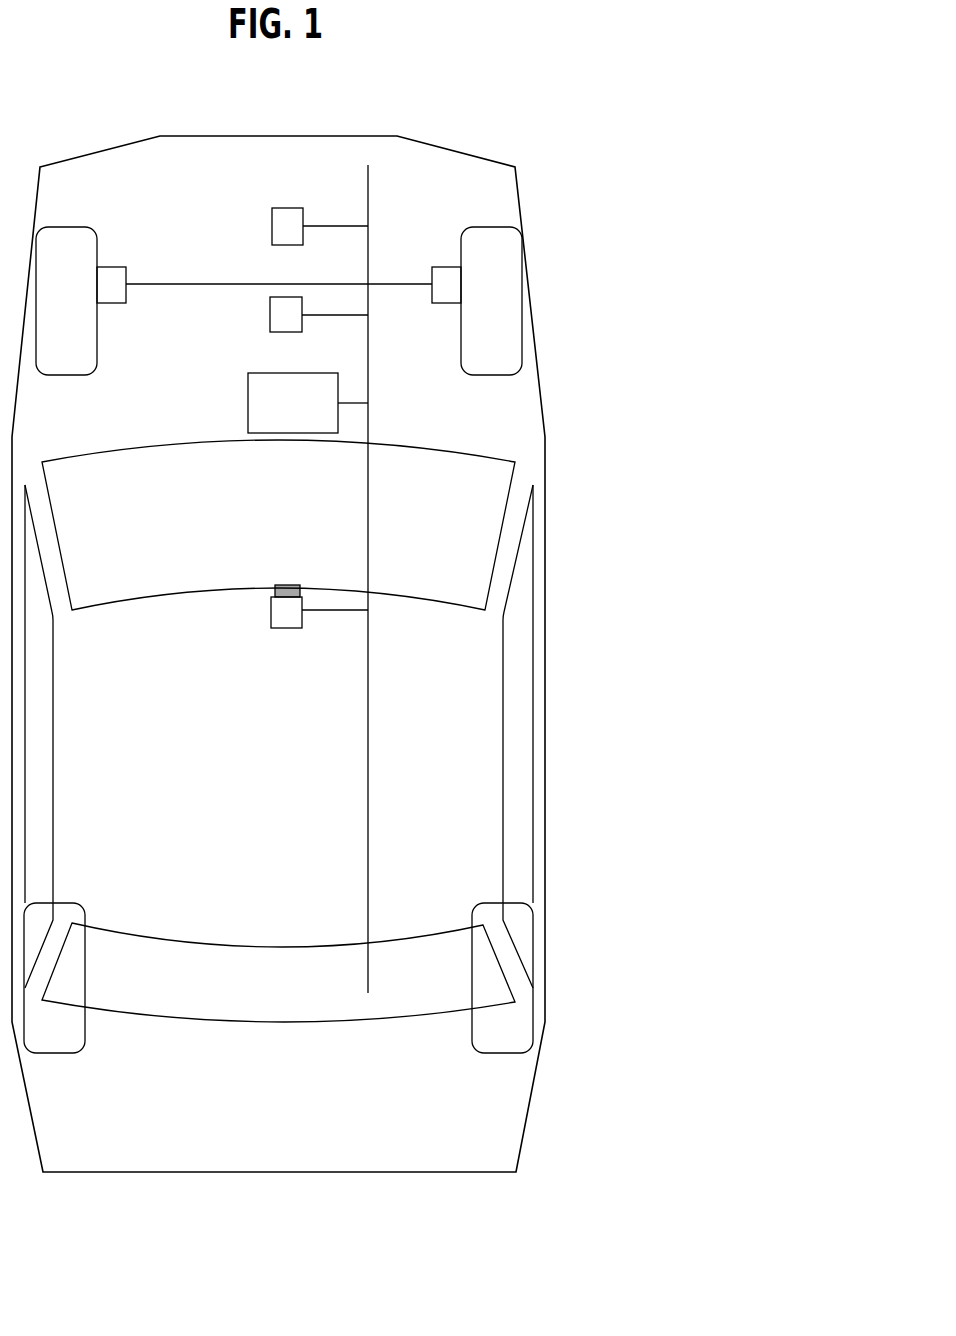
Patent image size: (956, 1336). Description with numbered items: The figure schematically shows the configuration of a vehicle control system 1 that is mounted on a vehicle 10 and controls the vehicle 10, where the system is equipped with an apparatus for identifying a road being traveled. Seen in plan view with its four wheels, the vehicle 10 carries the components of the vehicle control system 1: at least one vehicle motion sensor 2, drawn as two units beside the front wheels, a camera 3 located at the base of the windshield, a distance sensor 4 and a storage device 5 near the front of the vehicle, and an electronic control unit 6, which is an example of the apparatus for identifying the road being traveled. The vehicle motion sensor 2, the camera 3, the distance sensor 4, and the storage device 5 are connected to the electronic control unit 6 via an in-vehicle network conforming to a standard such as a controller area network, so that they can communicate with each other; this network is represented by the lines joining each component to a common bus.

The vehicle control system 1 is at (680, 1158).
The vehicle motion sensor 2 is at (110, 267).
The camera 3 is at (283, 630).
The distance sensor 4 is at (272, 220).
The storage device 5 is at (270, 313).
The electronic control unit 6 is at (248, 383).
The vehicle 10 is at (547, 948).